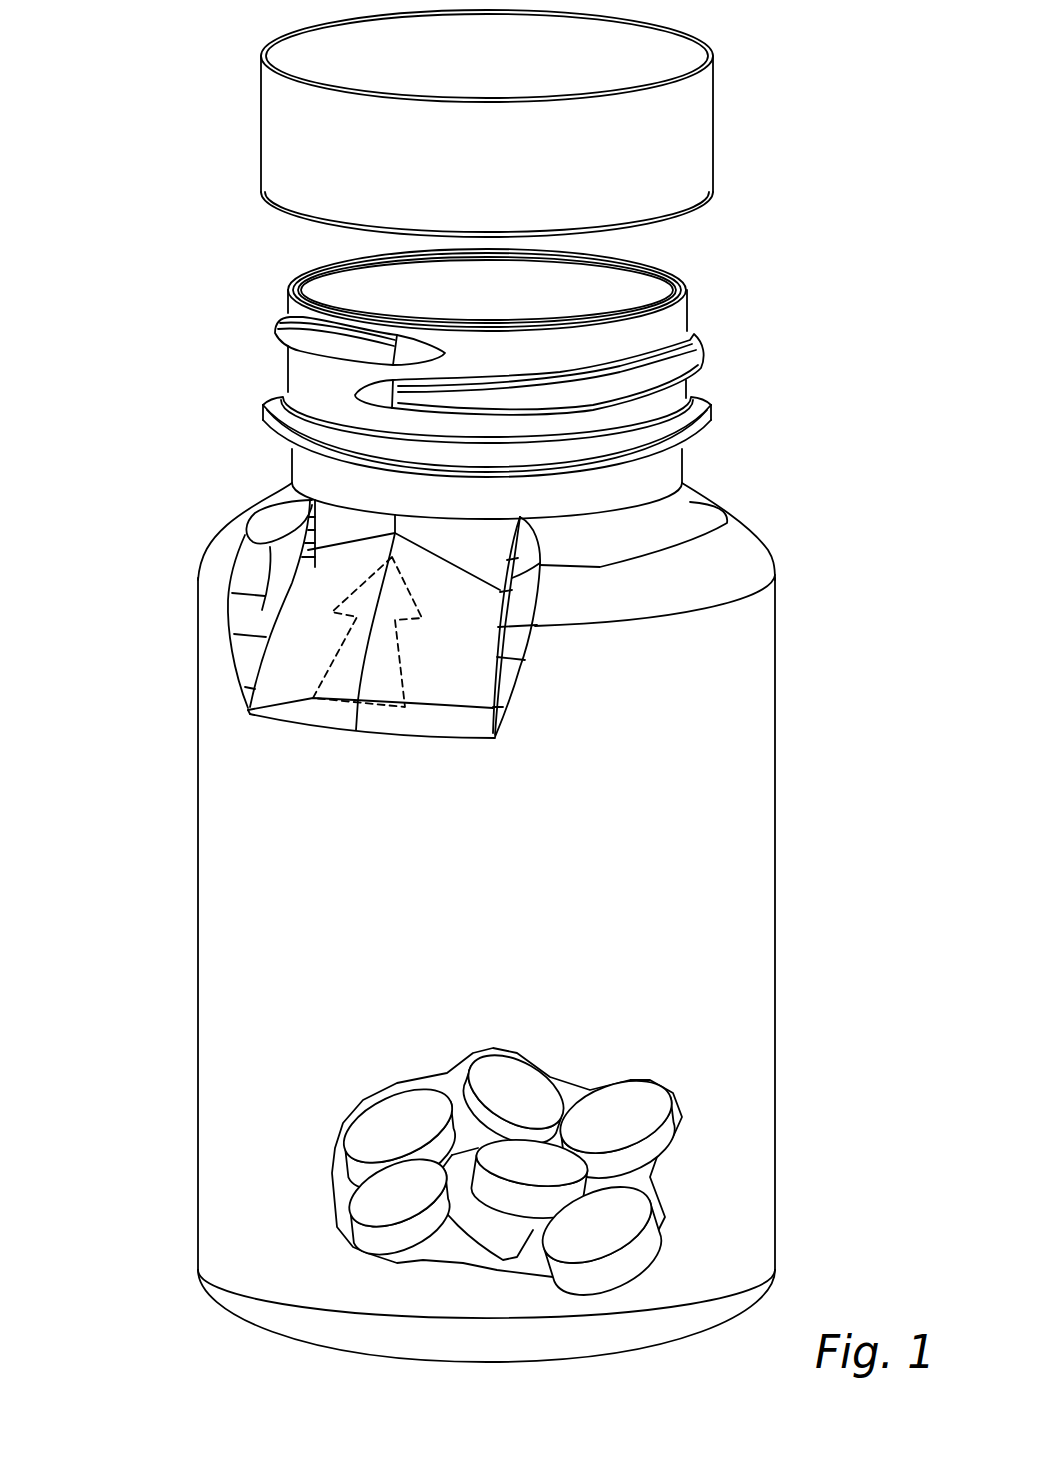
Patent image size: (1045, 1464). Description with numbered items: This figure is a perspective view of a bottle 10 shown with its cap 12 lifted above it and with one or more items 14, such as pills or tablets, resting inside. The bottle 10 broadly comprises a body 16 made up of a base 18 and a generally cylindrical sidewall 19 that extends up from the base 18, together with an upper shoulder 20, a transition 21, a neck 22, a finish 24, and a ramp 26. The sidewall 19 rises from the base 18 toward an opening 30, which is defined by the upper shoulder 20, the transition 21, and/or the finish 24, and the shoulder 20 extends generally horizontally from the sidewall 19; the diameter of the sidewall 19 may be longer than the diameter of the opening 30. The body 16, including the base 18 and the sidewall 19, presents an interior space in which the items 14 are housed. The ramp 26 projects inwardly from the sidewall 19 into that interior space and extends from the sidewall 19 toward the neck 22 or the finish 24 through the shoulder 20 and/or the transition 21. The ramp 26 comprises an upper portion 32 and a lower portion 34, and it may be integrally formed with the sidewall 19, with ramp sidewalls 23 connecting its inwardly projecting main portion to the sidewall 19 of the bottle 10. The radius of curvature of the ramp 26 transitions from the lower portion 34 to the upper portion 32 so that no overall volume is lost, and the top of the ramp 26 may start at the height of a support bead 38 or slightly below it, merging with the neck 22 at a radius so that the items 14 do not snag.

The bottle 10 is at (138, 122).
The cap 12 is at (710, 103).
The items 14 is at (523, 1085).
The body 16 is at (717, 853).
The base 18 is at (257, 1312).
The sidewall 19 is at (333, 664).
The upper shoulder 20 is at (760, 567).
The transition 21 is at (683, 523).
The neck 22 is at (668, 468).
The ramp sidewalls 23 is at (275, 578).
The finish 24 is at (702, 343).
The ramp 26 is at (300, 655).
The opening 30 is at (360, 292).
The upper portion 32 is at (392, 558).
The lower portion 34 is at (460, 707).
The support bead 38 is at (607, 508).